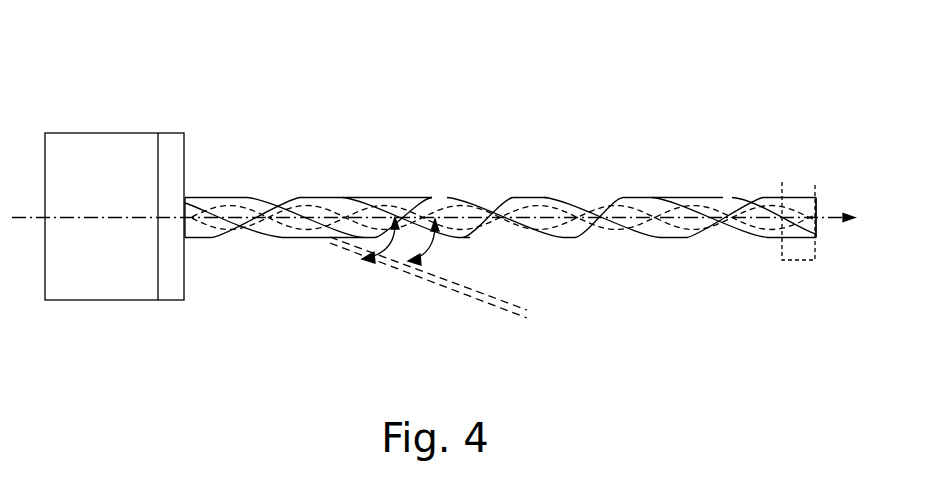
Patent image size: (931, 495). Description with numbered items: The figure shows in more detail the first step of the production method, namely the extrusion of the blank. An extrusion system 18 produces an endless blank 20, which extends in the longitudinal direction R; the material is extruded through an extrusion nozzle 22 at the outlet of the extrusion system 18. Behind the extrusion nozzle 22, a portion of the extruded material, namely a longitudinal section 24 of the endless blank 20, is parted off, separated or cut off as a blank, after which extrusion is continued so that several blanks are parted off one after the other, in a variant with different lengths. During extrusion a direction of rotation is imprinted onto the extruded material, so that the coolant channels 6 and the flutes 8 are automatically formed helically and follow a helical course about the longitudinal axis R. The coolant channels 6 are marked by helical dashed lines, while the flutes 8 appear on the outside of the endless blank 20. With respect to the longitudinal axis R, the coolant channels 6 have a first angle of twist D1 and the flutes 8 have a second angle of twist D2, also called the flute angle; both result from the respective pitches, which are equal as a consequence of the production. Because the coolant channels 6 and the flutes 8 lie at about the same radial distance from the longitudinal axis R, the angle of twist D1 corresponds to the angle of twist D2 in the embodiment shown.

The extrusion system 18 is at (95, 124).
The extrusion nozzle 22 is at (168, 138).
The endless blank 20 is at (500, 227).
The flutes 8 is at (618, 198).
The coolant channels 6 is at (681, 202).
The longitudinal axis R is at (822, 200).
The longitudinal section 24 is at (798, 262).
The first angle of twist D1 is at (383, 250).
The second angle of twist D2 is at (437, 257).